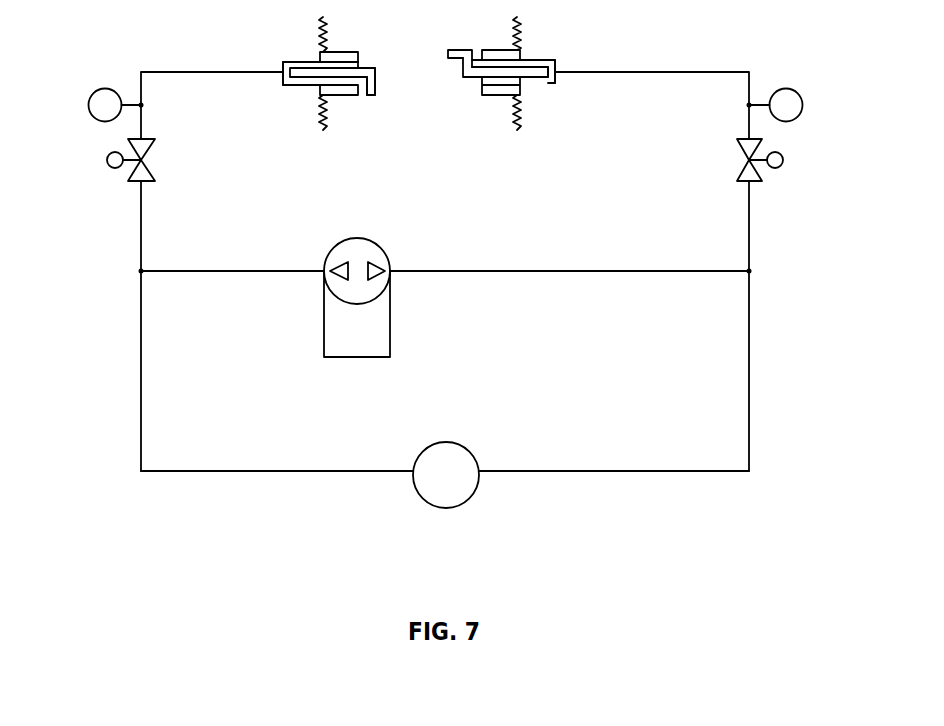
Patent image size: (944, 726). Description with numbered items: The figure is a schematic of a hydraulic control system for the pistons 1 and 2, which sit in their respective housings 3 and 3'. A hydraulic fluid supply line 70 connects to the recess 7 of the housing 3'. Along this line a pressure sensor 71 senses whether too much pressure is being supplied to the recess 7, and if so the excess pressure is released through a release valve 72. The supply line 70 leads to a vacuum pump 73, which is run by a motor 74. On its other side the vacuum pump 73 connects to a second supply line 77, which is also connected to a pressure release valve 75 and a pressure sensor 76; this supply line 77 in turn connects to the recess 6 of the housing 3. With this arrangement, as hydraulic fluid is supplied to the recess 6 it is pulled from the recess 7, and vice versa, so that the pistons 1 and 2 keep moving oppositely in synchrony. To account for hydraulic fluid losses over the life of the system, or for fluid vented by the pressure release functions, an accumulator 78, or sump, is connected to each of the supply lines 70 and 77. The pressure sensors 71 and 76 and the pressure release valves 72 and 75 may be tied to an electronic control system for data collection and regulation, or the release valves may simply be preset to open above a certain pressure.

The piston 1 is at (372, 94).
The piston 2 is at (458, 60).
The housing 3 is at (321, 84).
The housing 3' is at (504, 77).
The recess 6 is at (290, 83).
The recess 7 is at (552, 83).
The hydraulic fluid supply line 70 is at (673, 71).
The pressure sensor 71 is at (802, 105).
The release valve 72 is at (783, 160).
The vacuum pump 73 is at (355, 240).
The motor 74 is at (323, 323).
The pressure release valve 75 is at (106, 160).
The sensor 76 is at (88, 105).
The supply line 77 is at (170, 71).
The accumulator 78 is at (445, 509).